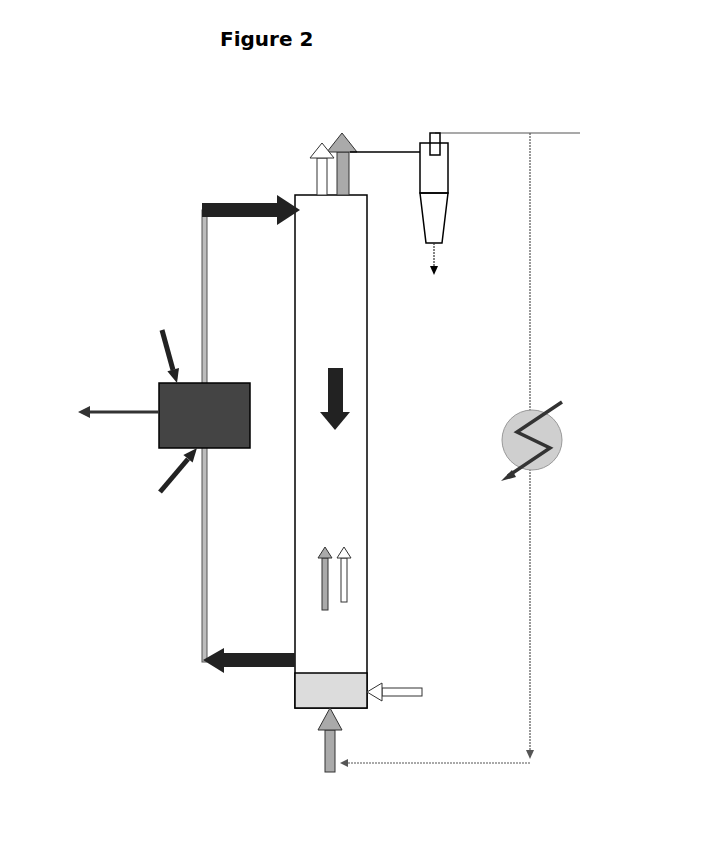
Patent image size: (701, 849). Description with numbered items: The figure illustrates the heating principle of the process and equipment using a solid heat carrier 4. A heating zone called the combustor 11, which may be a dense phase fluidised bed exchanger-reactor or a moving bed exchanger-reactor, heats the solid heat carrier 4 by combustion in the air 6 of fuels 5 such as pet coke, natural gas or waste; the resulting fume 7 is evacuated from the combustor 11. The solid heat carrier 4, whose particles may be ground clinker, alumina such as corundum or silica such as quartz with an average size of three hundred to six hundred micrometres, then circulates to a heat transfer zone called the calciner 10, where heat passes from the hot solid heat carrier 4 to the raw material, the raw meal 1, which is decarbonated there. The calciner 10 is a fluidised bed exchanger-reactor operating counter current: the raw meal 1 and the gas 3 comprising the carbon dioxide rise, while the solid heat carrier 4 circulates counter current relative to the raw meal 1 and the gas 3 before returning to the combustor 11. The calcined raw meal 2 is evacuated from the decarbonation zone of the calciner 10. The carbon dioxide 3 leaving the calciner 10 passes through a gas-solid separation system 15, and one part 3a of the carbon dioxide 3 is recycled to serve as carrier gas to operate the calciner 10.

The raw meal 1 is at (393, 624).
The calcined raw meal 2 is at (322, 156).
The gas comprising carbon dioxide 3 is at (459, 460).
The recycled part of the carbon dioxide 3a is at (531, 446).
The solid heat carrier 4 is at (259, 434).
The fuels 5 is at (171, 488).
The air 6 is at (166, 342).
The fume 7 is at (103, 413).
The calciner 10 is at (367, 619).
The combustor 11 is at (159, 430).
The gas-solid separation system 15 is at (448, 176).